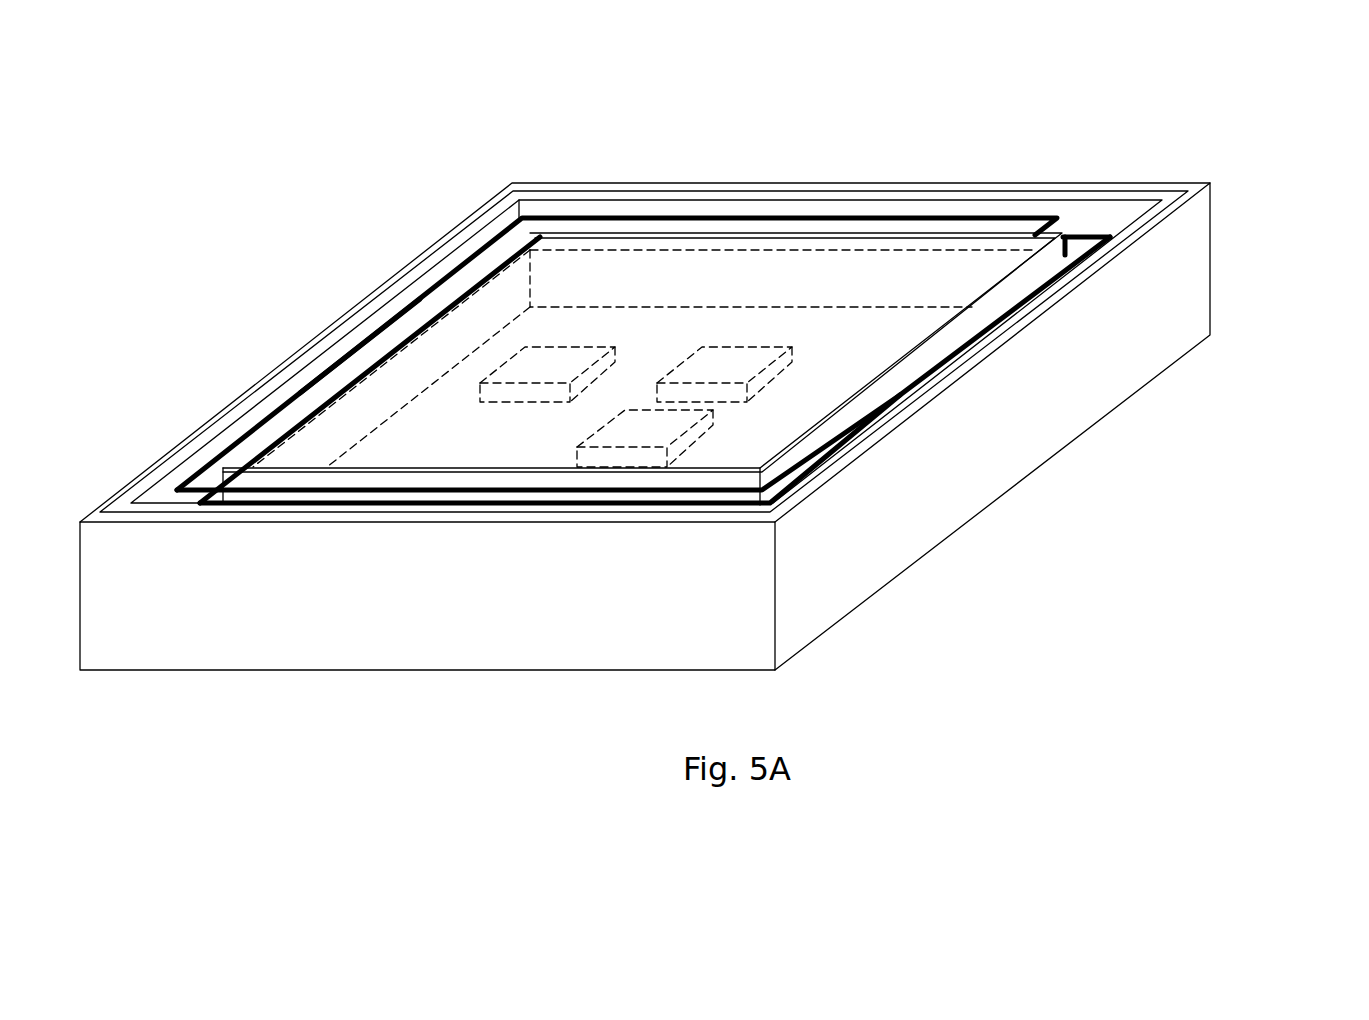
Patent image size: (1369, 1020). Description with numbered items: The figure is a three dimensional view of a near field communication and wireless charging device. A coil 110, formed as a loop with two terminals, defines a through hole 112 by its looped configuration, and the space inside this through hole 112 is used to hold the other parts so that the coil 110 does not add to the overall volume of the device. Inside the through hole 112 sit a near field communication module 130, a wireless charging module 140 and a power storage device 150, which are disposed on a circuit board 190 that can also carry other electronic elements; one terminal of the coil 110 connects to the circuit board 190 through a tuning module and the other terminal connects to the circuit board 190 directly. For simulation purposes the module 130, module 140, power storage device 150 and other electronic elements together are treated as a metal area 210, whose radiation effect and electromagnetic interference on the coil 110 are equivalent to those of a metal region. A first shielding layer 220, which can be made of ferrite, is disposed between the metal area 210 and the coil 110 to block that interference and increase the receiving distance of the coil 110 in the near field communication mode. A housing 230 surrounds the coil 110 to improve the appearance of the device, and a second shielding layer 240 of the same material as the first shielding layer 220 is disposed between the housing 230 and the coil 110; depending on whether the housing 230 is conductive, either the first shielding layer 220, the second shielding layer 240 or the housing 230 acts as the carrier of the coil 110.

The coil 110 is at (248, 434).
The through hole 112 is at (425, 298).
The near field communication module 130 is at (550, 370).
The wireless charging module 140 is at (732, 368).
The power storage device 150 is at (645, 430).
The circuit board 190 is at (865, 343).
The metal area 210 is at (957, 245).
The first shielding layer 220 is at (1070, 248).
The housing 230 is at (1198, 250).
The second shielding layer 240 is at (1168, 198).